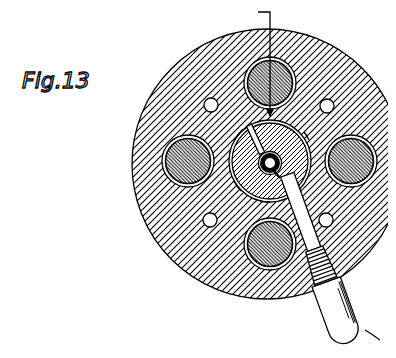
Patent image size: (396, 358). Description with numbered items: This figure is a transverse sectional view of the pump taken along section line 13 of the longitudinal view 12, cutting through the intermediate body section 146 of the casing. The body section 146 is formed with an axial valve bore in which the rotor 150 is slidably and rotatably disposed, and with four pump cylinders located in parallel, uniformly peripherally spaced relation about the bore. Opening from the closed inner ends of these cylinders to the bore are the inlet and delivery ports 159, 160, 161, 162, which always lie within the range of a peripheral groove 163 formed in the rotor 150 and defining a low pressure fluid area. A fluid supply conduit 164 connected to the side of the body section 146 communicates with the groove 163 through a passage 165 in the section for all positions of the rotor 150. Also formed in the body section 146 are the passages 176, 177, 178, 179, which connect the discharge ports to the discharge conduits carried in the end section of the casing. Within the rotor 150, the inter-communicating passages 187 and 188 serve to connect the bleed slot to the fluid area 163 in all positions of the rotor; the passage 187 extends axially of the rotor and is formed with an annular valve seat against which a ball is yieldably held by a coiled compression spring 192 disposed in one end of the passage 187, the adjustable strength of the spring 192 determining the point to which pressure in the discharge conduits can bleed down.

The Fig. 12 section reference 12 is at (340, 346).
The section line 13— 13 is at (376, 342).
The intermediate body section 146 is at (253, 291).
The rotor 150 is at (252, 113).
The inlet and delivery port 159 is at (268, 111).
The inlet and delivery port 160 is at (231, 181).
The inlet and delivery port 161 is at (261, 195).
The inlet and delivery port 162 is at (301, 131).
The peripheral groove 163 is at (234, 124).
The fluid supply conduit 164 is at (330, 326).
The passage 165 is at (298, 195).
The passage 176 is at (201, 219).
The passage 177 is at (326, 212).
The passage 178 is at (326, 97).
The passage 179 is at (196, 99).
The passage 187 is at (273, 152).
The passage 188 is at (256, 131).
The coiled compression spring 192 is at (269, 168).